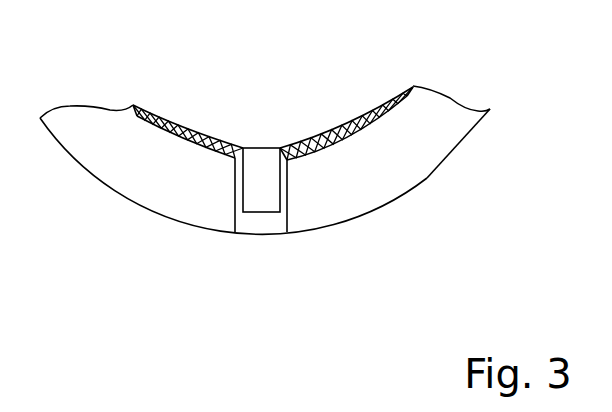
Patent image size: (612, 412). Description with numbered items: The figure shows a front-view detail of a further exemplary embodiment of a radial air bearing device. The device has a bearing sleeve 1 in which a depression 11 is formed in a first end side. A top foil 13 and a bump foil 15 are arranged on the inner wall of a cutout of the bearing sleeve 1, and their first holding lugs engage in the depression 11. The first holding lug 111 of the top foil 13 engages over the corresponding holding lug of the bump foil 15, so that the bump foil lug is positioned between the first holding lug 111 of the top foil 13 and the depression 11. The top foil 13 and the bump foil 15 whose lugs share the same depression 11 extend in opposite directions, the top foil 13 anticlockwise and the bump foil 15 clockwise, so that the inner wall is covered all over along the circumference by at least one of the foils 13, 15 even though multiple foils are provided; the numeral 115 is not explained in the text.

The bearing sleeve 1 is at (433, 176).
The depression 11 is at (263, 220).
The first holding lug 111 is at (259, 182).
The connection portion 115 is at (299, 140).
The top foil 13 is at (188, 128).
The bump foil 15 is at (360, 110).